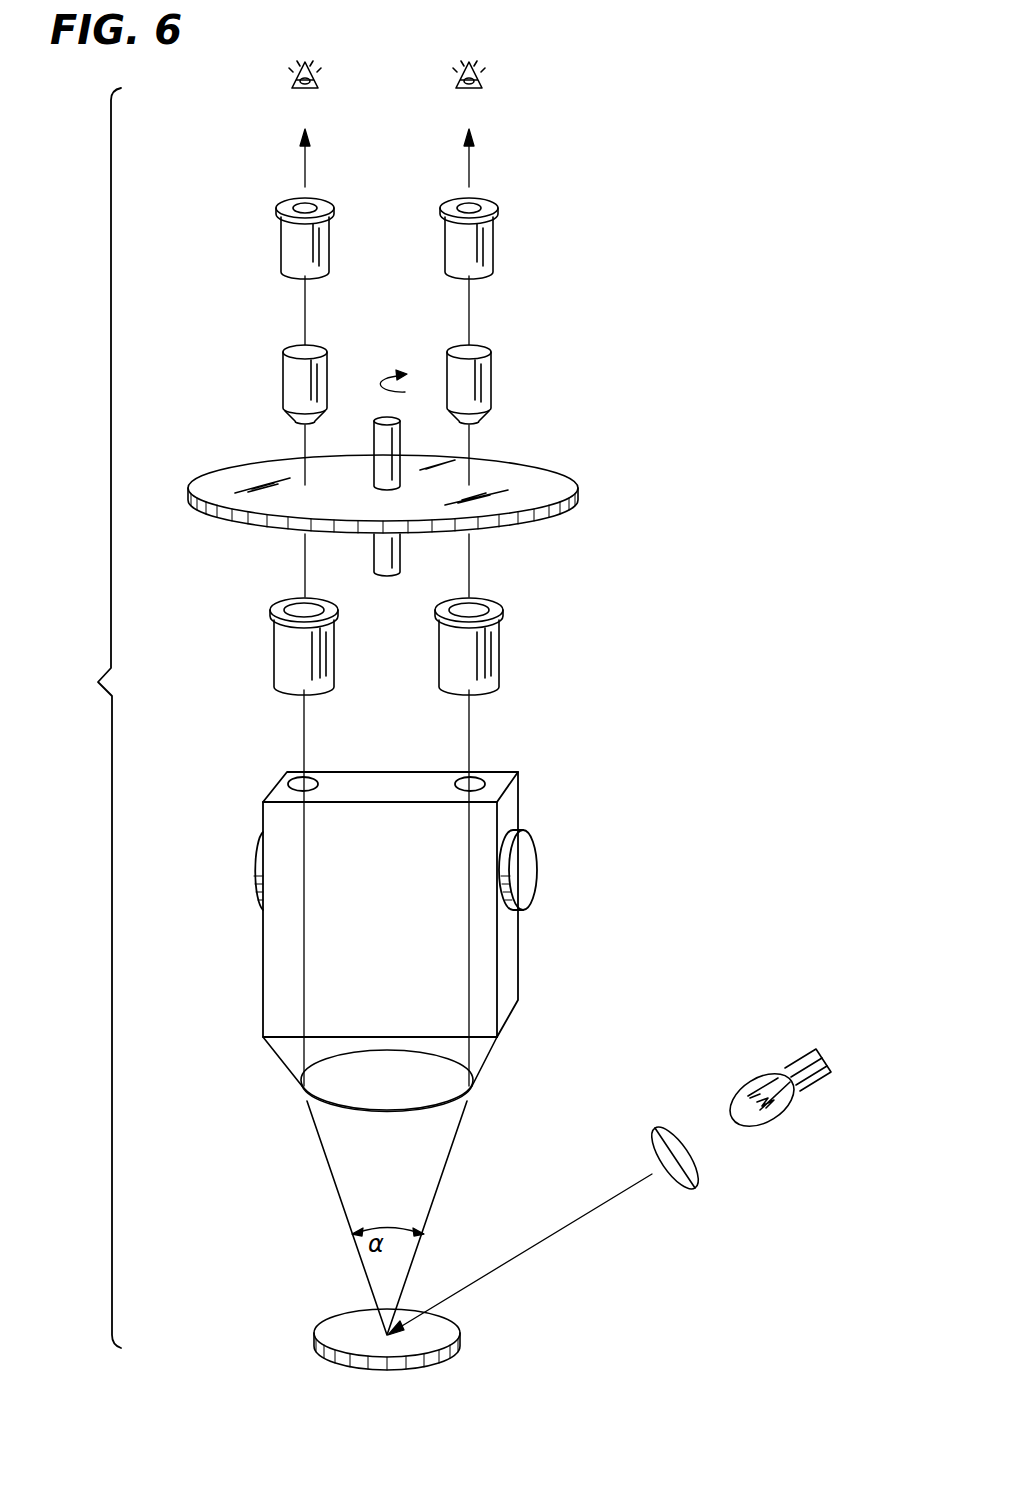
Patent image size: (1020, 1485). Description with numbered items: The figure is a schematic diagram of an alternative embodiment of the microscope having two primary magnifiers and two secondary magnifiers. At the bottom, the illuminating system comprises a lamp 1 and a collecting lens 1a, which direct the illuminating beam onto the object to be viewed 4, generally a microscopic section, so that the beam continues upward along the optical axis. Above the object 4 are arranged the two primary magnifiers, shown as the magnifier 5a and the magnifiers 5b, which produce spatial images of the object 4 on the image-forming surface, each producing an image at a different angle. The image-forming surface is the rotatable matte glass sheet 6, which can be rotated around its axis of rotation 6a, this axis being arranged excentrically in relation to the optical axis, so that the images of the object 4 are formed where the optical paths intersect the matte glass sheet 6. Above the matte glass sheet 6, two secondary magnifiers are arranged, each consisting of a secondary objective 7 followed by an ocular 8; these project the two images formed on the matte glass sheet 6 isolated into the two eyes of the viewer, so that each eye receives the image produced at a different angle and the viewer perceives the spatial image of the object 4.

The lamp 1 is at (795, 1113).
The collecting lens 1a is at (692, 1190).
The object to be viewed 4 is at (336, 1345).
The primary magnifier 5a is at (519, 966).
The primary magnifier 5b is at (283, 665).
The rotatable matte glass sheet 6 is at (566, 487).
The axis of rotation 6a is at (397, 422).
The secondary objective 7 is at (287, 402).
The ocular 8 is at (285, 250).